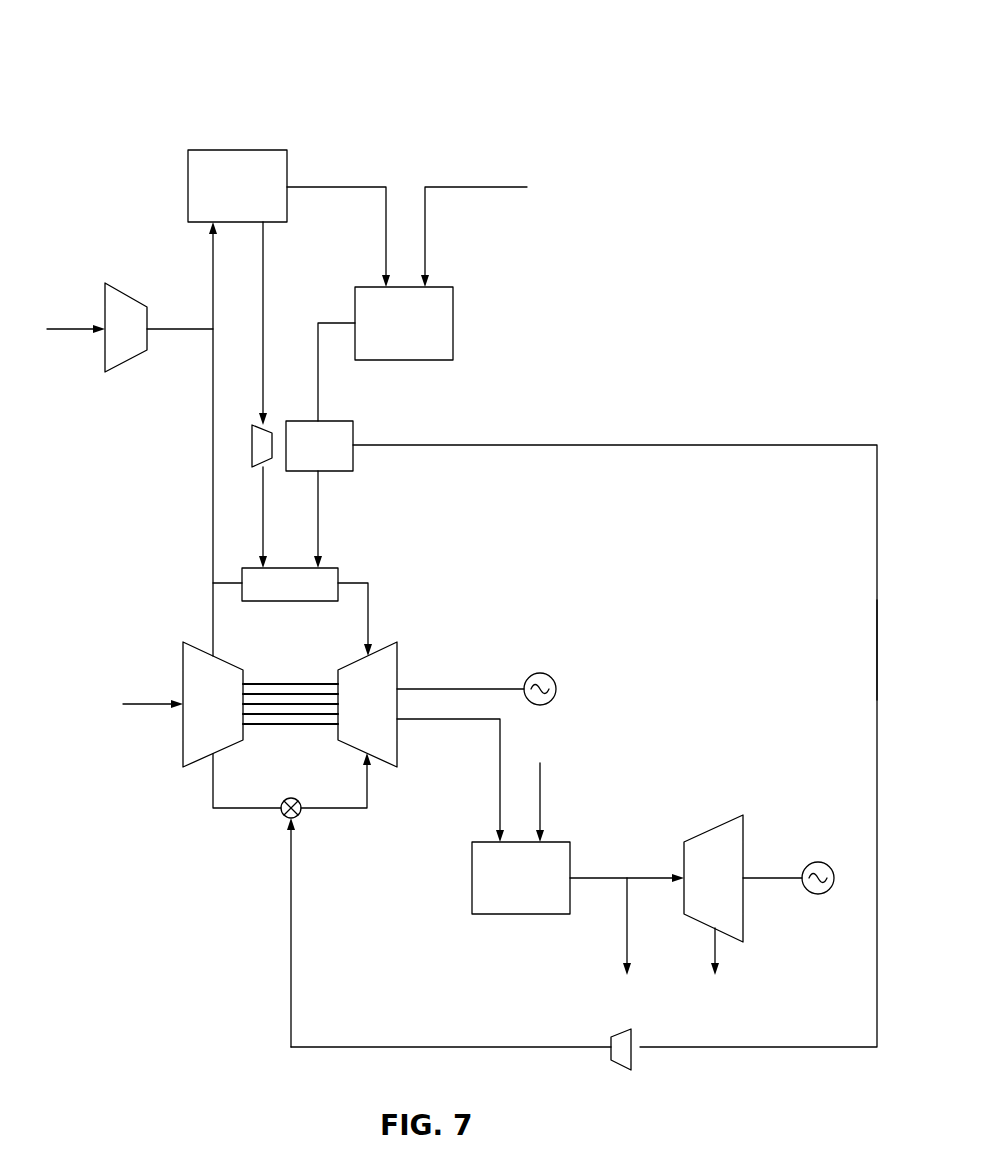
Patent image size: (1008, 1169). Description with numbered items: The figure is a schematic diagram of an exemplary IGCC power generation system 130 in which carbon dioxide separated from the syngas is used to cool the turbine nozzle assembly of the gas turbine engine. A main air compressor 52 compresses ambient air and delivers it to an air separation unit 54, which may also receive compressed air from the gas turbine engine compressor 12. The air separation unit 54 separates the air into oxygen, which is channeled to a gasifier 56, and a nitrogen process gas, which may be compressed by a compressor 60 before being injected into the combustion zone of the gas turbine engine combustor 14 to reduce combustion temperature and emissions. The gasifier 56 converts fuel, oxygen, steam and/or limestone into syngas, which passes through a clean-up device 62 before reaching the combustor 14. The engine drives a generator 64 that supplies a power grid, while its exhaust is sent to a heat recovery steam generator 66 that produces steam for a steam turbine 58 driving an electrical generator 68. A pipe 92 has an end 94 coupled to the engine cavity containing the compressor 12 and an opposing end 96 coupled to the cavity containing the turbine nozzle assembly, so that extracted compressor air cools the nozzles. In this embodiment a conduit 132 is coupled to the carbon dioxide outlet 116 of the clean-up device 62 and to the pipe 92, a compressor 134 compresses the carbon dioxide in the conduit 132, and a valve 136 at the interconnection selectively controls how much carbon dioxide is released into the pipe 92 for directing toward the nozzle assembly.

The IGCC power generation system 130 is at (588, 48).
The air separation unit 54 is at (253, 200).
The main air compressor 52 is at (142, 341).
The compressor 60 is at (255, 425).
The gasifier 56 is at (420, 337).
The clean-up device 62 is at (338, 471).
The carbon dioxide outlet 116 is at (358, 445).
The conduit 132 is at (877, 640).
The compressor 134 is at (622, 1068).
The gas turbine engine combustor 14 is at (306, 597).
The gas turbine engine compressor 12 is at (290, 708).
The end 94 is at (212, 752).
The opposing end 96 is at (365, 752).
The pipe 92 is at (325, 808).
The valve 136 is at (283, 818).
The generator 64 is at (552, 675).
The heat recovery steam generator 66 is at (537, 892).
The steam turbine 58 is at (718, 830).
The electrical generator 68 is at (826, 864).